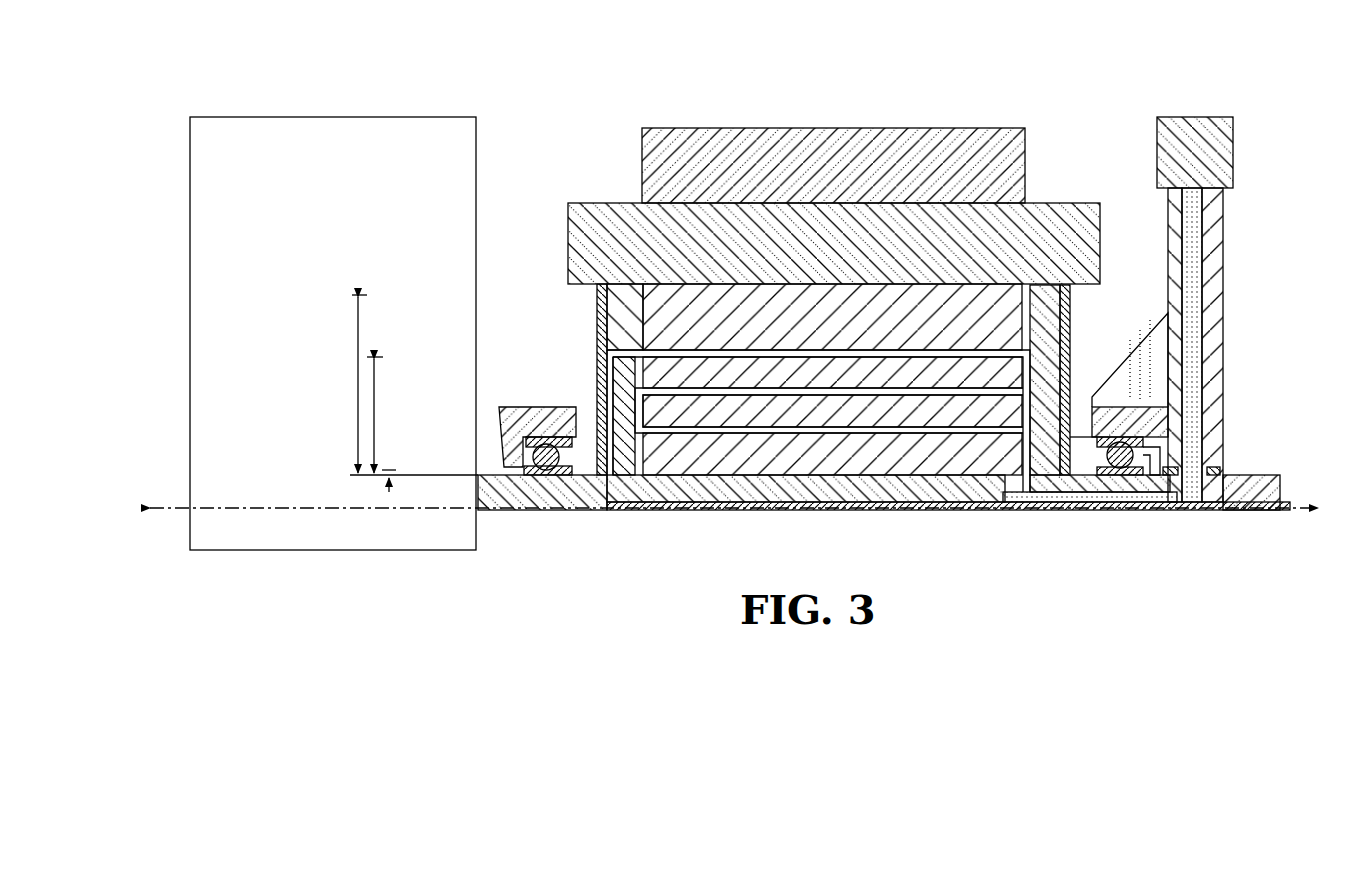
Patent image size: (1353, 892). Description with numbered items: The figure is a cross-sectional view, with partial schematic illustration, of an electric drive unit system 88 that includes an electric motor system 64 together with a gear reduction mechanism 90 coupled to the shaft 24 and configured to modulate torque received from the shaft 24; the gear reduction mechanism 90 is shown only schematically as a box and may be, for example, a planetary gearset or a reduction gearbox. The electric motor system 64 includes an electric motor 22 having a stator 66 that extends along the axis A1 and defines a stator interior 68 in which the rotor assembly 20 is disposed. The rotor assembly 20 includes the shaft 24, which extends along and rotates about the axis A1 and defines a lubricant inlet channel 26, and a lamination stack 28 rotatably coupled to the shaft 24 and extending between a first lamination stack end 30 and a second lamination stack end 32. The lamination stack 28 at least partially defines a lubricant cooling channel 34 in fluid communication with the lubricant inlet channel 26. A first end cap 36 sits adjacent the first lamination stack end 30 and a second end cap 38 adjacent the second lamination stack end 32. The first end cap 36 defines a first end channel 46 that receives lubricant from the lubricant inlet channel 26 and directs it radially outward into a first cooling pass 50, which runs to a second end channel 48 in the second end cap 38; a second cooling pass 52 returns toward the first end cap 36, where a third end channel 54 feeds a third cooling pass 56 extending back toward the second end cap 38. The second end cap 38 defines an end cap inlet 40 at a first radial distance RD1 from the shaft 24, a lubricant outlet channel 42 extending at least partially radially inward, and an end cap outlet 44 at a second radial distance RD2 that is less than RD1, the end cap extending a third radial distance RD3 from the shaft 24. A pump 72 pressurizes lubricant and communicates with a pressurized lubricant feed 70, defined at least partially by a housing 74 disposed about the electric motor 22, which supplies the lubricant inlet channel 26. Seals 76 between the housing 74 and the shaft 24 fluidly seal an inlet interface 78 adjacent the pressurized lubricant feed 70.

The rotor assembly 20 is at (566, 345).
The electric motor 22 is at (1048, 117).
The shaft 24 is at (548, 490).
The lubricant inlet channel 26 is at (1073, 500).
The lamination stack 28 is at (835, 312).
The first lamination stack end 30 is at (1025, 318).
The second lamination stack end 32 is at (670, 322).
The lubricant cooling channel 34 is at (786, 464).
The first end cap 36 is at (1050, 343).
The second end cap 38 is at (628, 312).
The end cap inlet 40 is at (612, 347).
The lubricant outlet channel 42 is at (615, 405).
The end cap outlet 44 is at (597, 476).
The first end channel 46 is at (1017, 450).
The second end channel 48 is at (634, 418).
The first cooling pass 50 is at (920, 430).
The second cooling pass 52 is at (880, 390).
The third end channel 54 is at (1028, 378).
The third cooling pass 56 is at (838, 358).
The electric motor system 64 is at (542, 169).
The stator 66 is at (1055, 235).
The stator interior 68 is at (587, 290).
The pressurized lubricant feed 70 is at (1197, 292).
The pump 72 is at (1235, 155).
The housing 74 is at (1215, 385).
The seal 76 is at (1170, 478).
The inlet interface 78 is at (1232, 471).
The electric drive unit system 88 is at (557, 67).
The gear reduction mechanism 90 is at (340, 130).
The axis A1 is at (1293, 503).
The first radial distance RD1 is at (376, 380).
The second radial distance RD2 is at (389, 467).
The third radial distance RD3 is at (360, 332).